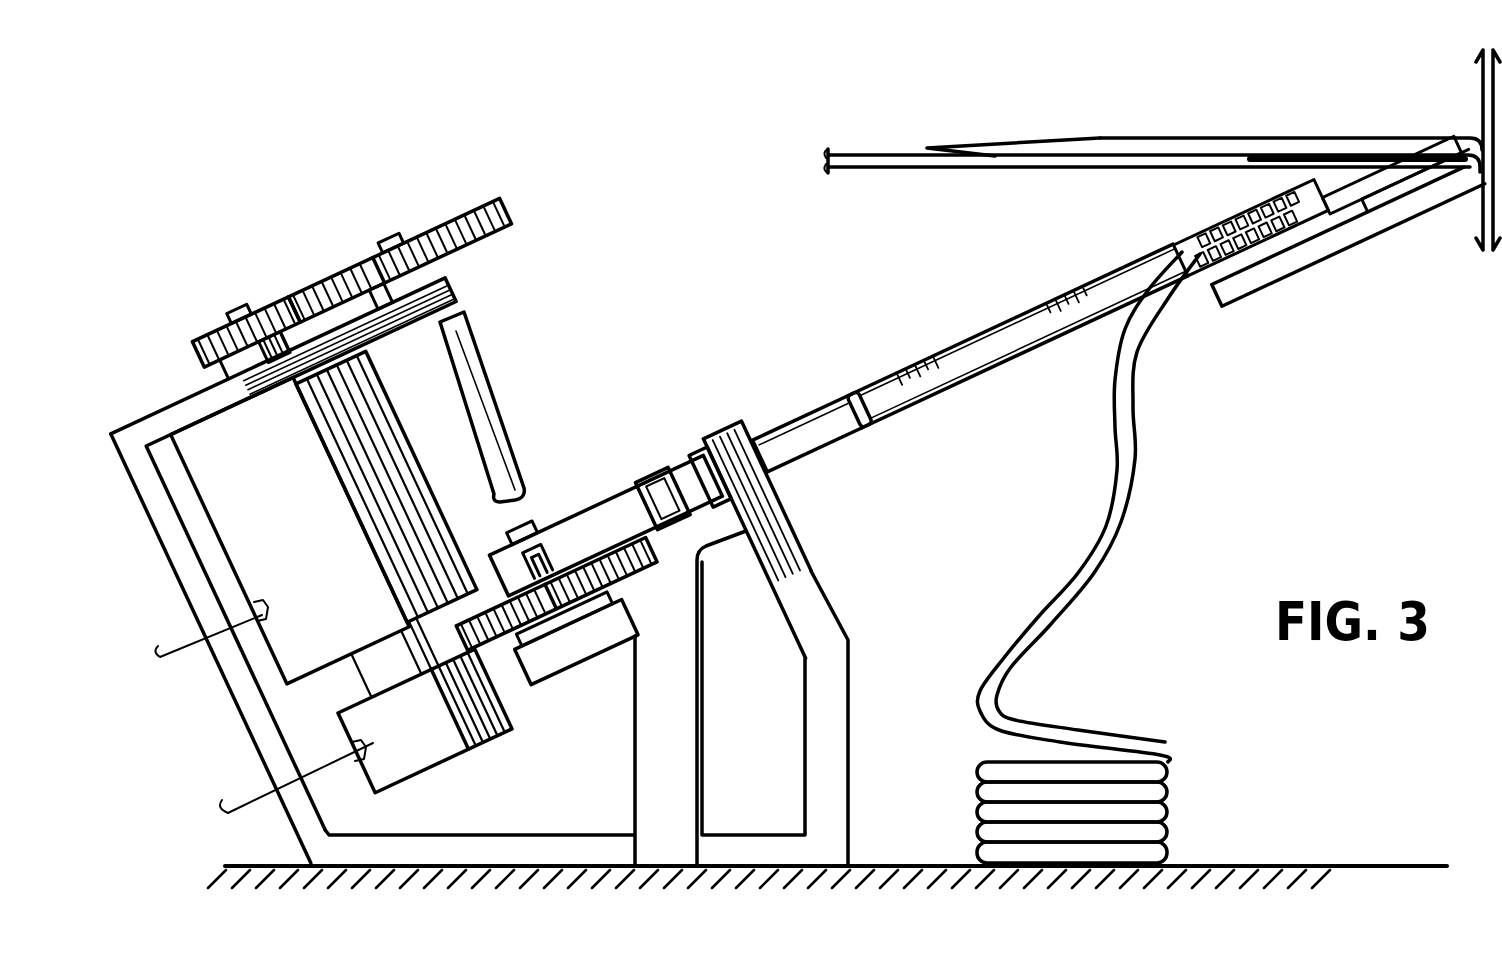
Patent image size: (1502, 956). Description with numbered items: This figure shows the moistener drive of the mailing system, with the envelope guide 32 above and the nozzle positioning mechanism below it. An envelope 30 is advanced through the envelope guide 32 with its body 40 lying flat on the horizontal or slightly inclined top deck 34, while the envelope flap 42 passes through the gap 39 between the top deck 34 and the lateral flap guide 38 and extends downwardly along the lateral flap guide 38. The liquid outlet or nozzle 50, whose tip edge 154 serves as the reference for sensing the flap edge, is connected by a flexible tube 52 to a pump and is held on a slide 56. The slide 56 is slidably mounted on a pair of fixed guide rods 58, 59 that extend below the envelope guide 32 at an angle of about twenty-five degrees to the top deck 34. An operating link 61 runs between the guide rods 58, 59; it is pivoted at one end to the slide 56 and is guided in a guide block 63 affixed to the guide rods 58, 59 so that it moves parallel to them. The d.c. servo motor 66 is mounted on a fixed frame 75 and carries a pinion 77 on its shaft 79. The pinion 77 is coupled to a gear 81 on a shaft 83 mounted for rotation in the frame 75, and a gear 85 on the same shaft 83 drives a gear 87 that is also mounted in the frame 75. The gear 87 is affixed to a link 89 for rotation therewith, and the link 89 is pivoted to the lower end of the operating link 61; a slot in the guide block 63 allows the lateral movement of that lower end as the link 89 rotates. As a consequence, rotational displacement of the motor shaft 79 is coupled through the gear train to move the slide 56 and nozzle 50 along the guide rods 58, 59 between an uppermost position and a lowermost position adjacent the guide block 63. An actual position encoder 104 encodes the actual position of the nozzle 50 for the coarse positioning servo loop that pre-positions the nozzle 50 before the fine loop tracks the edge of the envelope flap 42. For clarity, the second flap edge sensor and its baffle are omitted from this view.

The envelope 30 is at (1003, 140).
The envelope guide 32 is at (813, 140).
The top deck 34 is at (892, 157).
The lateral flap guide 38 is at (1270, 277).
The gap 39 is at (1472, 167).
The body 40 is at (1130, 140).
The envelope flap 42 is at (1440, 180).
The nozzle 50 is at (1373, 183).
The flexible tube 52 is at (1127, 503).
The slide 56 is at (1237, 210).
The guide rod 58 is at (1025, 320).
The guide rod 59 is at (820, 448).
The operating link 61 is at (908, 377).
The guide block 63 is at (722, 420).
The d.c. servo motor 66 is at (230, 520).
The fixed frame 75 is at (193, 580).
The pinion 77 is at (193, 342).
The shaft 79 is at (227, 362).
The gear 81 is at (500, 213).
The shaft 83 is at (464, 363).
The gear 85 is at (573, 567).
The gear 87 is at (640, 567).
The link 89 is at (625, 503).
The actual position encoder 104 is at (427, 750).
The tip edge 154 is at (1437, 147).